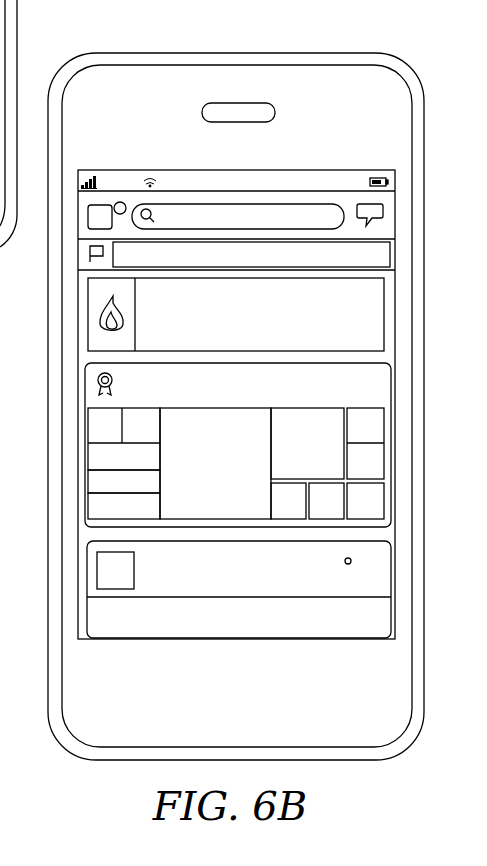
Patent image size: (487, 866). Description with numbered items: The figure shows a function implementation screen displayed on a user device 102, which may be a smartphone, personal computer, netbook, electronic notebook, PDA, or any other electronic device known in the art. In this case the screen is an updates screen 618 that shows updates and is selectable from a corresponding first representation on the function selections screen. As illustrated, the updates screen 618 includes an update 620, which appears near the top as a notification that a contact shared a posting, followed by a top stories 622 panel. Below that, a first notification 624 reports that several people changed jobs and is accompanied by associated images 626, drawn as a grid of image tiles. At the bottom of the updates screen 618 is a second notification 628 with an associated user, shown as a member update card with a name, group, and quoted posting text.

The user device 102 is at (148, 75).
The updates screen 618 is at (103, 505).
The update 620 is at (357, 253).
The top stories 622 is at (160, 330).
The first notification 624 is at (345, 385).
The associated images 626 is at (180, 487).
The second notification 628 is at (150, 572).